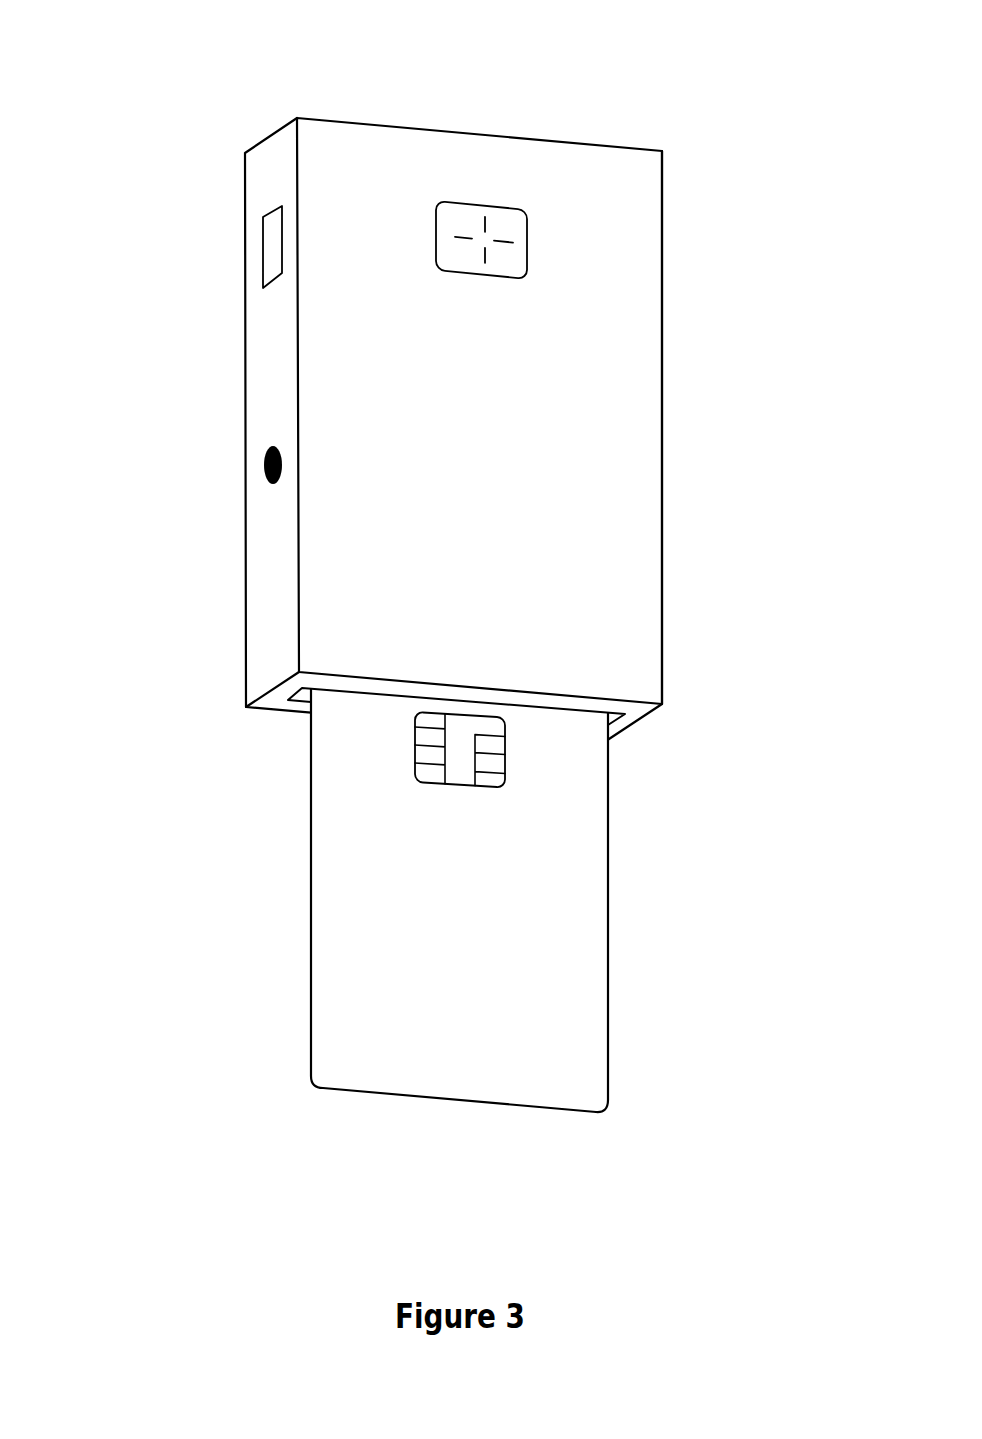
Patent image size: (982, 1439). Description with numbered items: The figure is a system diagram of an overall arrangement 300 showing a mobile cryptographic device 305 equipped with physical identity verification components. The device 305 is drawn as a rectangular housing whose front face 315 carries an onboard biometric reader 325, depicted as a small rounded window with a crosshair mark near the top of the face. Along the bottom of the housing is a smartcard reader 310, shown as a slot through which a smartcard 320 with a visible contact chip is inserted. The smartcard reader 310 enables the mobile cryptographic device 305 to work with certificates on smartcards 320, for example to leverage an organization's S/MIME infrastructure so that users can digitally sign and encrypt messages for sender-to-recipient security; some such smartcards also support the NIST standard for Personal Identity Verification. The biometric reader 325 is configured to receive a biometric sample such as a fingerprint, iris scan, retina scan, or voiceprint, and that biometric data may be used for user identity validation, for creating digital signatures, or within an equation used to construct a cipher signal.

The mobile payment device with card 300 is at (44, 27).
The mobile cryptographic device 305 is at (504, 460).
The smartcard reader 310 is at (610, 728).
The front face of housing 315 is at (663, 456).
The smartcard 320 is at (459, 900).
The onboard biometric reader 325 is at (513, 228).